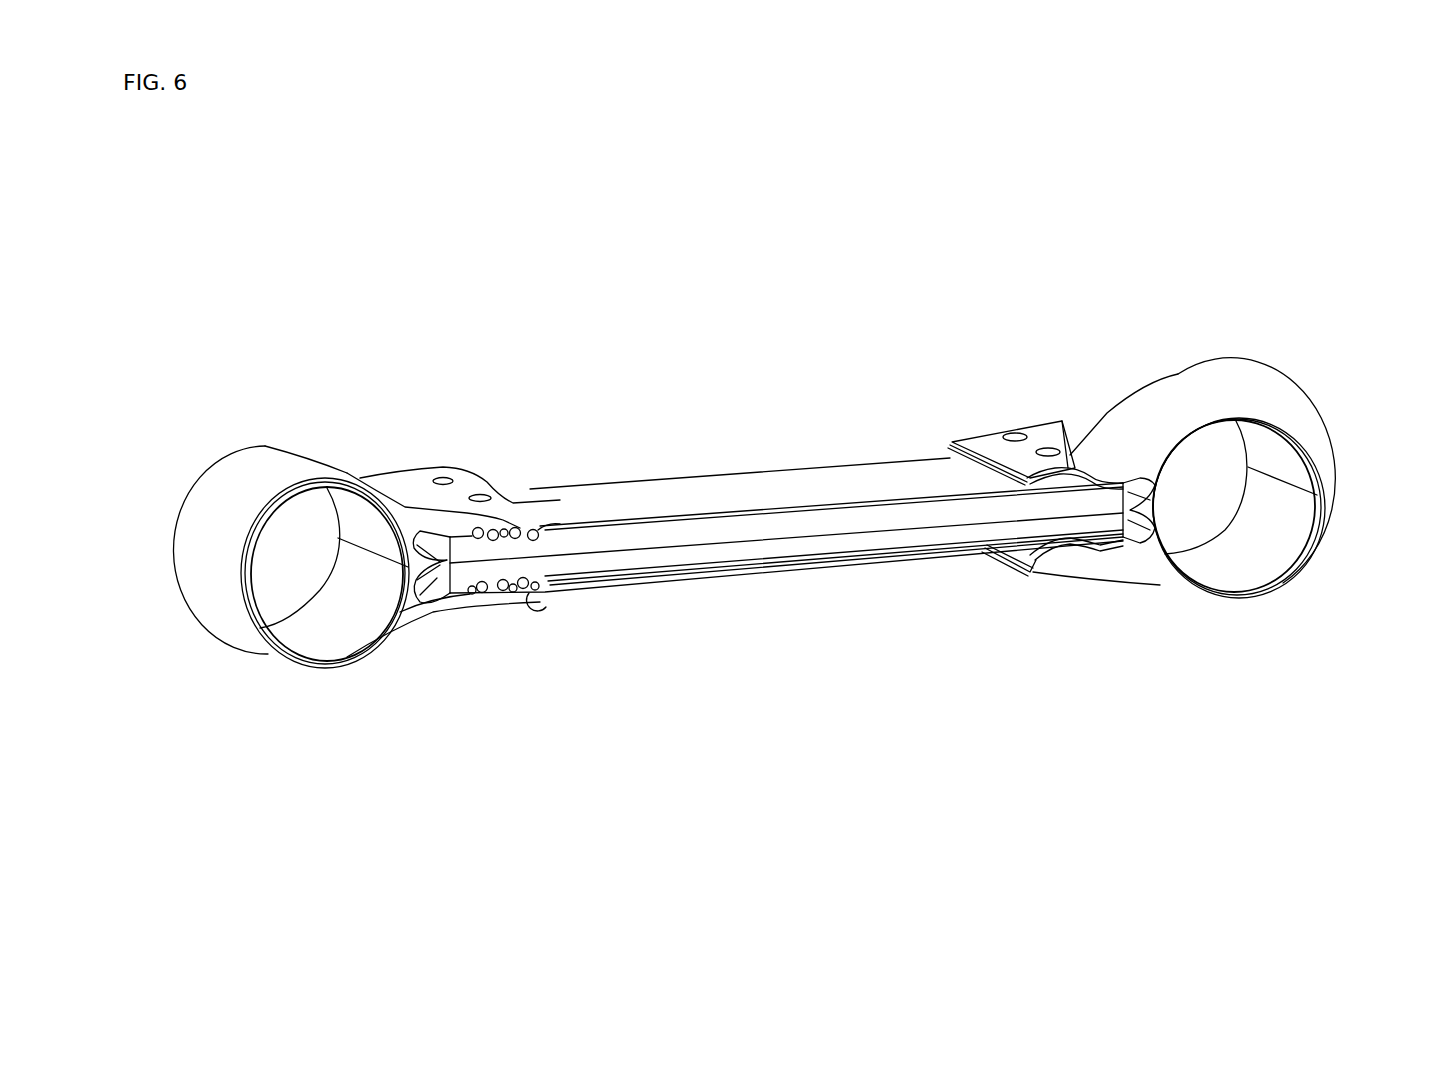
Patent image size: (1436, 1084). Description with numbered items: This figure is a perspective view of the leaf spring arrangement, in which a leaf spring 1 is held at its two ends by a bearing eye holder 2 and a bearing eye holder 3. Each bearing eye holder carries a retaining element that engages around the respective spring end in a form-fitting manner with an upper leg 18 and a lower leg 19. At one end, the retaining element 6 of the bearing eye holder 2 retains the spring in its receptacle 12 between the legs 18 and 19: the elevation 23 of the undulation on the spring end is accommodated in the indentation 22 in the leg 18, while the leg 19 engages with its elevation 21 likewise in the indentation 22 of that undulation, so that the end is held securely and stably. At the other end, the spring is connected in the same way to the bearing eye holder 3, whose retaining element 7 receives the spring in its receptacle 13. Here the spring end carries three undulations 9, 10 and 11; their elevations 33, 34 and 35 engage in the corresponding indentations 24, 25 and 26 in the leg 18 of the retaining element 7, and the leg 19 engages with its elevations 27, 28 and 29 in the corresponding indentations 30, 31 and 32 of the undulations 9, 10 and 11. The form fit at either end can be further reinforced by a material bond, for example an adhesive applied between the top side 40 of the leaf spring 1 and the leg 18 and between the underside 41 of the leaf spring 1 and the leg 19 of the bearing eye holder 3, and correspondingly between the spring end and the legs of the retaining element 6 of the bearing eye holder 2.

The leaf spring 1 is at (843, 852).
The bearing eye holder 2 is at (1339, 728).
The bearing eye holder 3 is at (203, 829).
The retaining element 6 is at (1143, 792).
The retaining element 7 is at (447, 784).
The undulation 9 is at (466, 458).
The undulation 10 is at (523, 414).
The undulation 11 is at (584, 459).
The receptacle 12 is at (1150, 488).
The receptacle 13 is at (413, 590).
The leg 18 is at (416, 486).
The leg 19 is at (432, 612).
The elevation 21 is at (1080, 543).
The indentation 22 is at (1066, 470).
The elevation 23 is at (1090, 480).
The indentation 24 is at (472, 537).
The indentation 25 is at (518, 528).
The indentation 26 is at (543, 512).
The elevation 27 is at (478, 592).
The elevation 28 is at (508, 593).
The elevation 29 is at (538, 591).
The indentation 30 is at (470, 592).
The indentation 31 is at (502, 593).
The indentation 32 is at (537, 595).
The elevation 33 is at (476, 533).
The elevation 34 is at (505, 530).
The elevation 35 is at (525, 518).
The top side 40 is at (771, 468).
The underside 41 is at (793, 567).